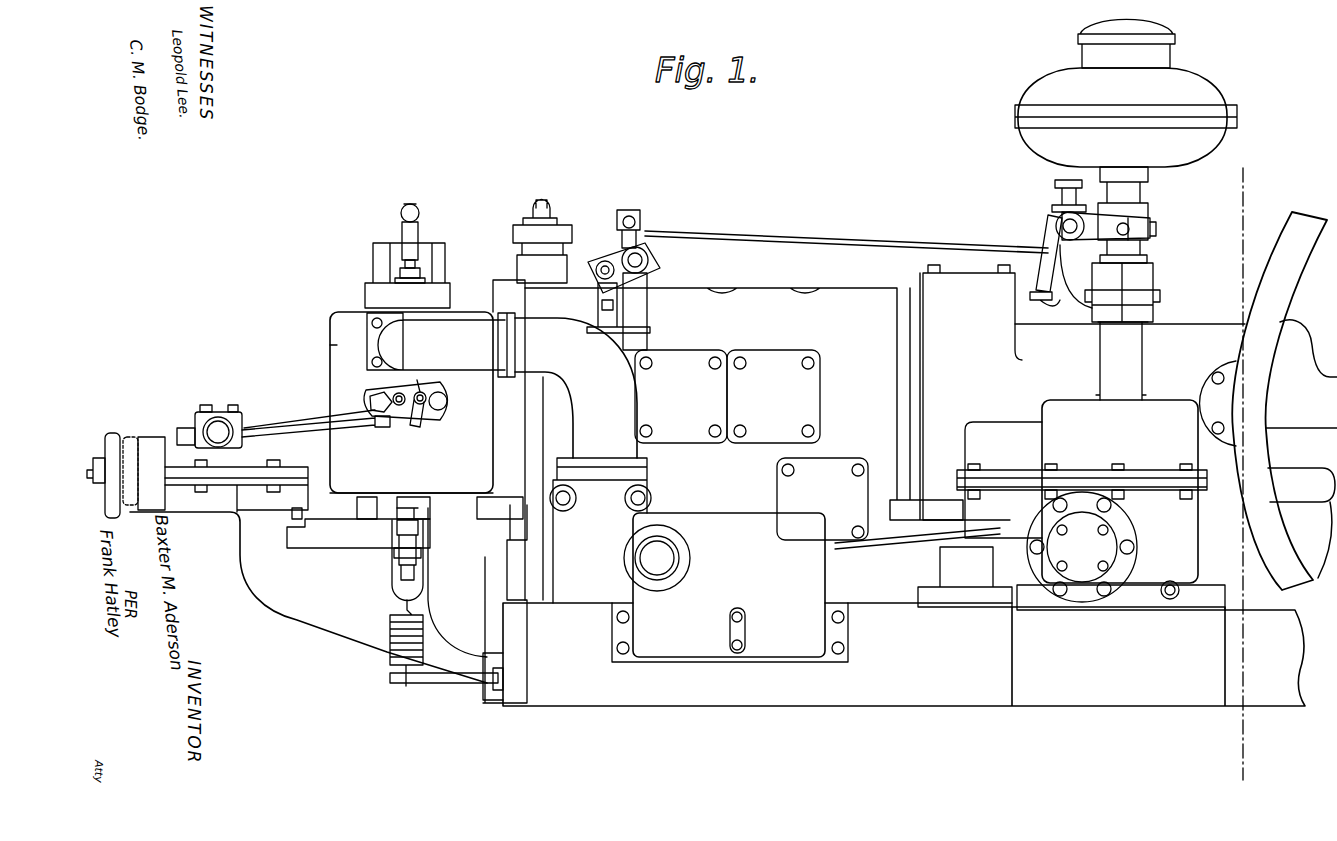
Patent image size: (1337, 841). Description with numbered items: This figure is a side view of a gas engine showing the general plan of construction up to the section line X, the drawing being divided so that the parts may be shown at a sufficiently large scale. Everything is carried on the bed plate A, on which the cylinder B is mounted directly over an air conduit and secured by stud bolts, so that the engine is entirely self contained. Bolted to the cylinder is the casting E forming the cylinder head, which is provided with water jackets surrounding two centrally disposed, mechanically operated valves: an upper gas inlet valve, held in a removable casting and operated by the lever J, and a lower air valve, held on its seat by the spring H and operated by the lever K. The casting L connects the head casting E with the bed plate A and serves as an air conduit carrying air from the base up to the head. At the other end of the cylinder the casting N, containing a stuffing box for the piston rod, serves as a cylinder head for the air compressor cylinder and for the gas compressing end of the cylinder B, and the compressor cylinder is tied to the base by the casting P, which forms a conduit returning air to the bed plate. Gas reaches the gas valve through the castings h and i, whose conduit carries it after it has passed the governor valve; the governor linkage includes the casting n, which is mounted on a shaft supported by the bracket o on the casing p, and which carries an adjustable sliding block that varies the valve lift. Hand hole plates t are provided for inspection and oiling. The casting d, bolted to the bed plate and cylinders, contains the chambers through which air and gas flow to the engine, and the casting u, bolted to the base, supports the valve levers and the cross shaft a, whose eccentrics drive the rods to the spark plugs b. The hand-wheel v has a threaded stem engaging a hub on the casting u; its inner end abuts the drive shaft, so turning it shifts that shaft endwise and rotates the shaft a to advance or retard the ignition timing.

The bed plate A is at (894, 654).
The cylinder B is at (744, 396).
The air chamber / reservoir C is at (1126, 170).
The cylinder head casting E is at (335, 322).
The lever J is at (418, 240).
The spring H is at (390, 655).
The lever K is at (385, 555).
The air conduit casting L is at (477, 604).
The casting N is at (912, 292).
The casting P is at (965, 577).
The inlet valve cam X is at (1242, 463).
The shaft a is at (221, 418).
The spark plug b is at (424, 420).
The casting d is at (699, 560).
The casting h is at (576, 388).
The casting i is at (436, 341).
The casting n is at (1109, 226).
The bracket o is at (1155, 275).
The casing p is at (1082, 491).
The pump rod r is at (905, 548).
The hand hole plate t is at (935, 476).
The casting u is at (308, 595).
The hand-wheel v is at (112, 433).